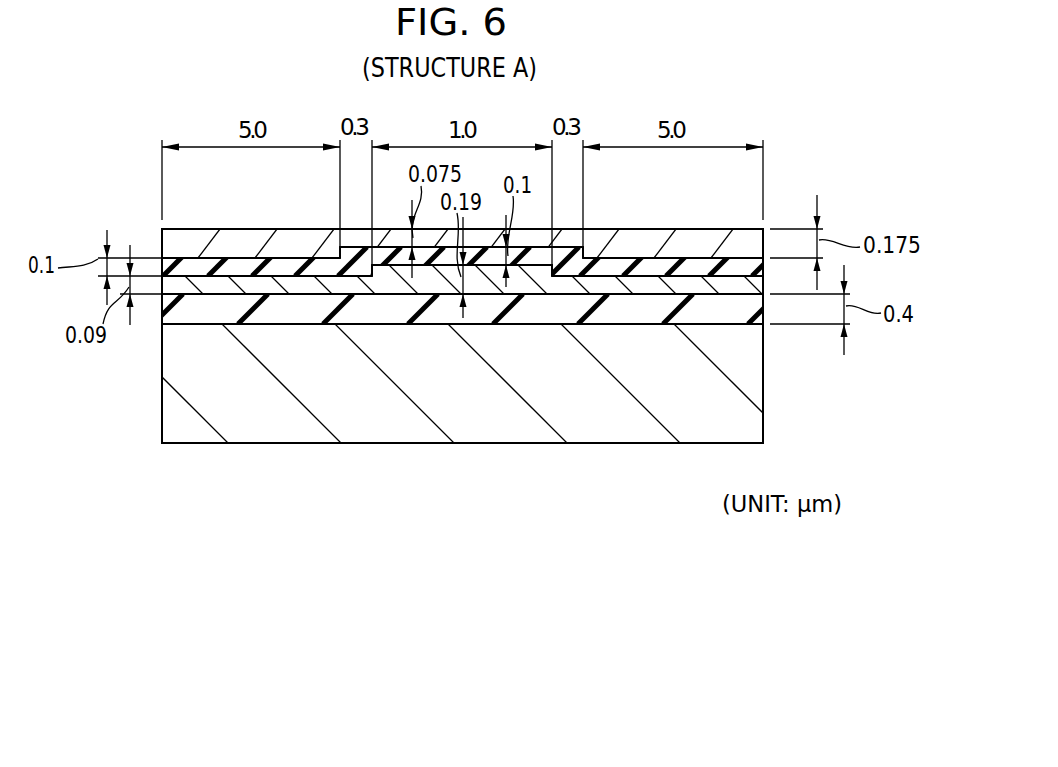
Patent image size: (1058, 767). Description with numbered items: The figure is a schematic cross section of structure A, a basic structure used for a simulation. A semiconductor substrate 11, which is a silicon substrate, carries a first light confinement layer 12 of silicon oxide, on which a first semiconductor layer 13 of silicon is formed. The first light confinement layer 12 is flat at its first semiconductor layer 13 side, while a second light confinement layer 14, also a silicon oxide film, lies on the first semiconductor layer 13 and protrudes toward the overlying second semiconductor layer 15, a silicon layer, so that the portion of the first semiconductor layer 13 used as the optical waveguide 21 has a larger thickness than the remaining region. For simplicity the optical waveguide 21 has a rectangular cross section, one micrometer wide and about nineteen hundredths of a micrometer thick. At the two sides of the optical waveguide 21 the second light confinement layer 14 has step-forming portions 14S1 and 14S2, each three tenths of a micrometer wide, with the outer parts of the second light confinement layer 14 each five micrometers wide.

The semiconductor substrate 11 is at (196, 400).
The first light confinement layer 12 is at (287, 313).
The first semiconductor layer 13 is at (638, 288).
The second light confinement layer 14 is at (623, 267).
The step-forming portion 14S1 is at (357, 266).
The step-forming portion 14S2 is at (568, 265).
The second semiconductor layer 15 is at (702, 247).
The optical waveguide 21 is at (430, 281).